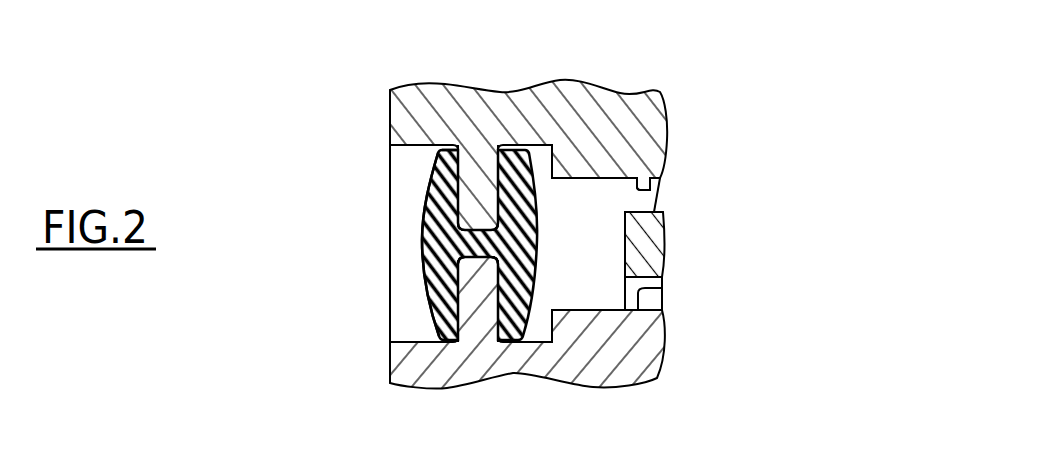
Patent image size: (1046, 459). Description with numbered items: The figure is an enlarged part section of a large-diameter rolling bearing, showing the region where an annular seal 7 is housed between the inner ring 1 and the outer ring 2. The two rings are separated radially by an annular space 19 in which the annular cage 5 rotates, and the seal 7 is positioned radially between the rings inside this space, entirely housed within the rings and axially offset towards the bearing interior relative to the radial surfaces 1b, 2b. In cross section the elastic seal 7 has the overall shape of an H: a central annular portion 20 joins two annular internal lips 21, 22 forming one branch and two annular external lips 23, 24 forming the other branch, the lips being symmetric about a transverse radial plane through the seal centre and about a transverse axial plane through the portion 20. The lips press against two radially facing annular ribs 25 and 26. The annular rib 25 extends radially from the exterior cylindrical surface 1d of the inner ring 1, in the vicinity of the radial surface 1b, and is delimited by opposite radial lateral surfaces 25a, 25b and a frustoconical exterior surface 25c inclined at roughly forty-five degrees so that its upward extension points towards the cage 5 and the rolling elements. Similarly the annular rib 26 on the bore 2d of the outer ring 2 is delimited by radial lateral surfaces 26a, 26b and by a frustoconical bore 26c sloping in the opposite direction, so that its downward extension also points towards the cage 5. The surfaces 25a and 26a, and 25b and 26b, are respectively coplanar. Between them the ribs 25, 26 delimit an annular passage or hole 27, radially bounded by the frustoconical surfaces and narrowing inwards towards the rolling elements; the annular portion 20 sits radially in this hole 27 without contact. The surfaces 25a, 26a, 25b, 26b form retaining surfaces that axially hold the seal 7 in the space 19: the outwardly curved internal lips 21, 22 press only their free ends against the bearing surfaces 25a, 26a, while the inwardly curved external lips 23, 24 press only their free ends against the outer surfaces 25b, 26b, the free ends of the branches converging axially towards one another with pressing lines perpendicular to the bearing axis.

The inner ring 1 is at (646, 330).
The radial surface of the inner ring 1b is at (390, 370).
The exterior cylindrical surface of the inner ring 1d is at (653, 288).
The outer ring 2 is at (647, 130).
The radial surface of the outer ring 2b is at (390, 103).
The bore of the outer ring 2d is at (657, 180).
The annular cage 5 is at (657, 233).
The annular seal 7 is at (412, 218).
The annular space 19 is at (607, 207).
The annular portion 20 is at (470, 245).
The annular internal lip 21 is at (535, 342).
The annular internal lip 22 is at (552, 178).
The annular external lip 23 is at (440, 315).
The annular external lip 24 is at (435, 155).
The annular rib 25 is at (425, 357).
The radial lateral surface 25a is at (545, 335).
The radial lateral surface 25b is at (430, 338).
The frustoconical exterior surface 25c is at (492, 268).
The annular rib 26 is at (480, 175).
The radial lateral surface 26a is at (552, 172).
The radial lateral surface 26b is at (425, 183).
The frustoconical bore 26c is at (493, 200).
The annular passage 27 is at (470, 273).